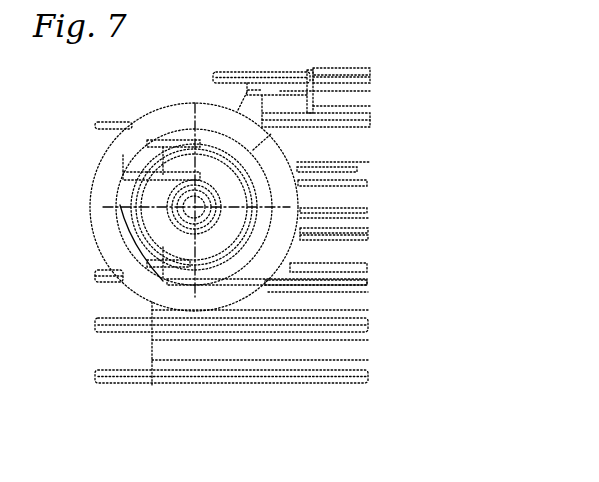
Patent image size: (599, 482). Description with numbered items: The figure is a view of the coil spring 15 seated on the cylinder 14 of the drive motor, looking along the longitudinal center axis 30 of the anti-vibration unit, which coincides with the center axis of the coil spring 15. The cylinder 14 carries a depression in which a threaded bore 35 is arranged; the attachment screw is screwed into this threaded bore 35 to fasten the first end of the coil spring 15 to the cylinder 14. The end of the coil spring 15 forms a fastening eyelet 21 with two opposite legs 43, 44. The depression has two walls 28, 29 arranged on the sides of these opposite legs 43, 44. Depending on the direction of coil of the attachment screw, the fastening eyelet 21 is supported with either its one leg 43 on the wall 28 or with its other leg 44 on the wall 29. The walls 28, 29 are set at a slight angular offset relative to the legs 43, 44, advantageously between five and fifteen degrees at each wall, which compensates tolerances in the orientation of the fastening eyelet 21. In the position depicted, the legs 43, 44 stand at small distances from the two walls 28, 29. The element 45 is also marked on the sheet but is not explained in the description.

The housing 14 is at (328, 168).
The head portion 15 is at (110, 163).
The bearing ring 21 is at (235, 220).
The seal element 28 is at (170, 146).
The groove 29 is at (163, 281).
The axis 30 is at (186, 198).
The hub 35 is at (177, 210).
The cover element 43 is at (153, 163).
The lower cover element 44 is at (152, 272).
The base 45 is at (200, 392).